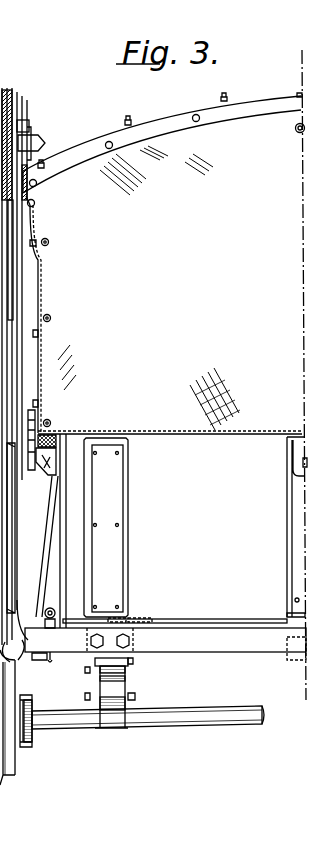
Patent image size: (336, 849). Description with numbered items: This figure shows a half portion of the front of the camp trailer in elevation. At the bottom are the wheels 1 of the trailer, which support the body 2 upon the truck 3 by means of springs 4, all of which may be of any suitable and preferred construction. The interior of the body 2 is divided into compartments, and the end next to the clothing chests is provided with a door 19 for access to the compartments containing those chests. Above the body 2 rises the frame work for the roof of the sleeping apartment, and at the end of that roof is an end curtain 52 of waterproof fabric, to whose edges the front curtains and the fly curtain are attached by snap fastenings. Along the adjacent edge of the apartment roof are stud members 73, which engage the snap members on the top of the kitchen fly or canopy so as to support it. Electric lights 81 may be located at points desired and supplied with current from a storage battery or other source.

The wheels 1 is at (20, 752).
The body 2 is at (181, 640).
The truck 3 is at (148, 698).
The springs 4 is at (93, 688).
The door 19 is at (178, 538).
The end curtain 52 is at (164, 290).
The stud members 73 is at (133, 106).
The electric lights 81 is at (43, 142).